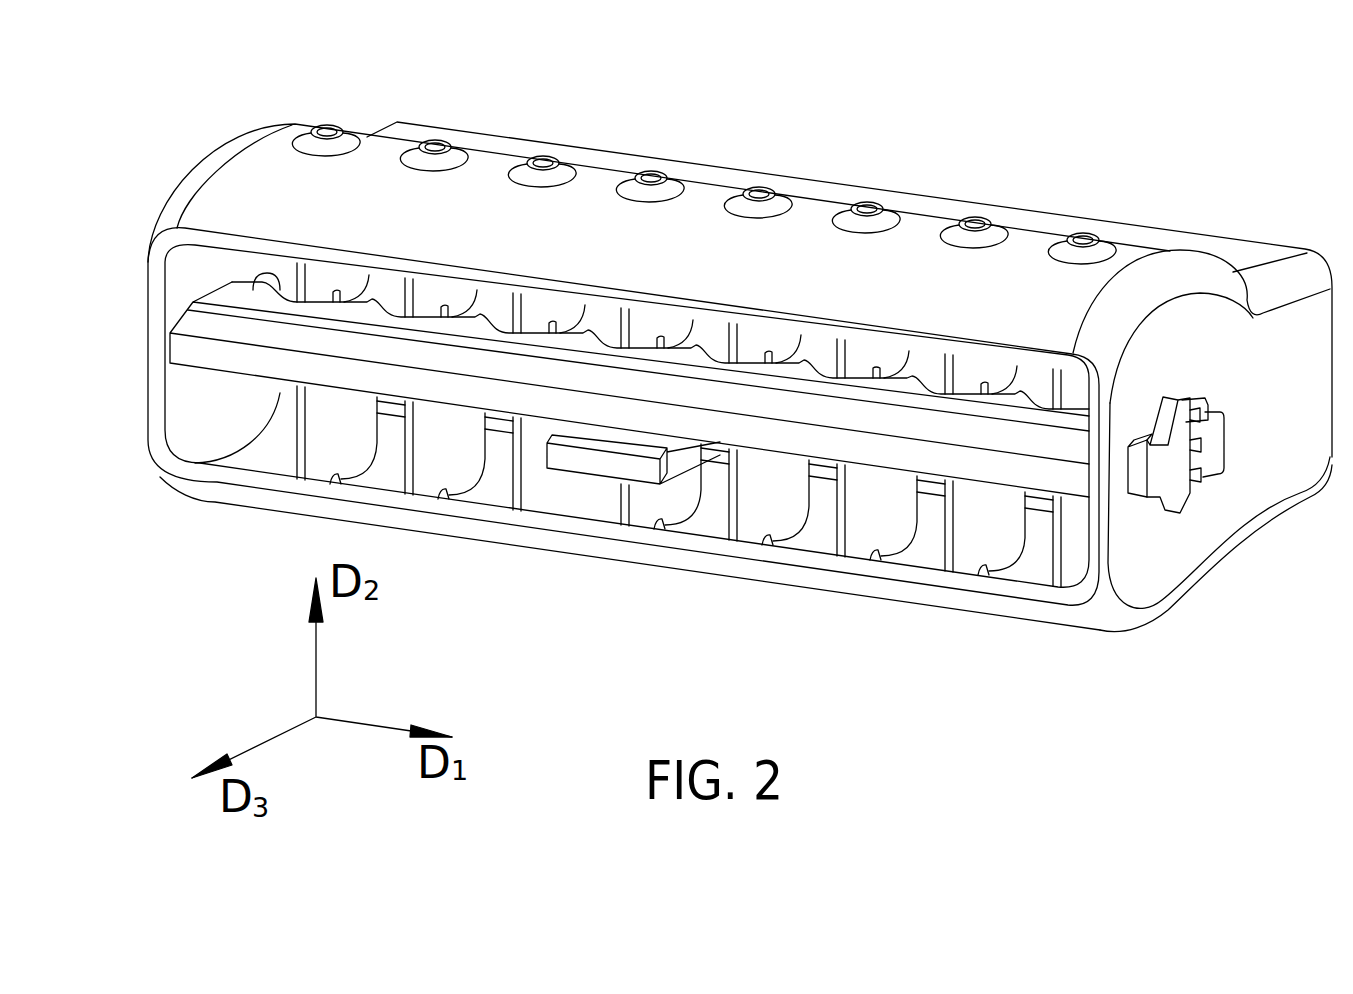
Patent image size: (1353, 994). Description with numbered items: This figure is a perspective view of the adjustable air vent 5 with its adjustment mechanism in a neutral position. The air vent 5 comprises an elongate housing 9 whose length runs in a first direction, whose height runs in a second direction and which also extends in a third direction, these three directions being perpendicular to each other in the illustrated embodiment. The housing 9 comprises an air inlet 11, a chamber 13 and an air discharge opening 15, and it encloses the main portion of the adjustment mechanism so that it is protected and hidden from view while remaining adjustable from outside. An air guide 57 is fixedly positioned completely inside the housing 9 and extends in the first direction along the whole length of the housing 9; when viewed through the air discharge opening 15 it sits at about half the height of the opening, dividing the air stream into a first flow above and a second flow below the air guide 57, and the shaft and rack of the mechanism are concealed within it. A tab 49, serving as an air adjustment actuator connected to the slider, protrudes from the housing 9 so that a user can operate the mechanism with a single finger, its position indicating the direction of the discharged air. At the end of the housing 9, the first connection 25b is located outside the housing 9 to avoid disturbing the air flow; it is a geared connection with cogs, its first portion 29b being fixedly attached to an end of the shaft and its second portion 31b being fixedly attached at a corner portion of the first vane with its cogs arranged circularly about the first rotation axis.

The air vent 5 is at (955, 113).
The air inlet 11 is at (1190, 222).
The air discharge opening 15 is at (200, 400).
The chamber 13 is at (276, 398).
The air guide 57 is at (800, 437).
The tab 49 is at (617, 462).
The housing 9 is at (1153, 550).
The first connection 25b is at (1190, 495).
The first portion of the first connection 29b is at (1183, 497).
The second portion of the first connection 31b is at (1213, 445).